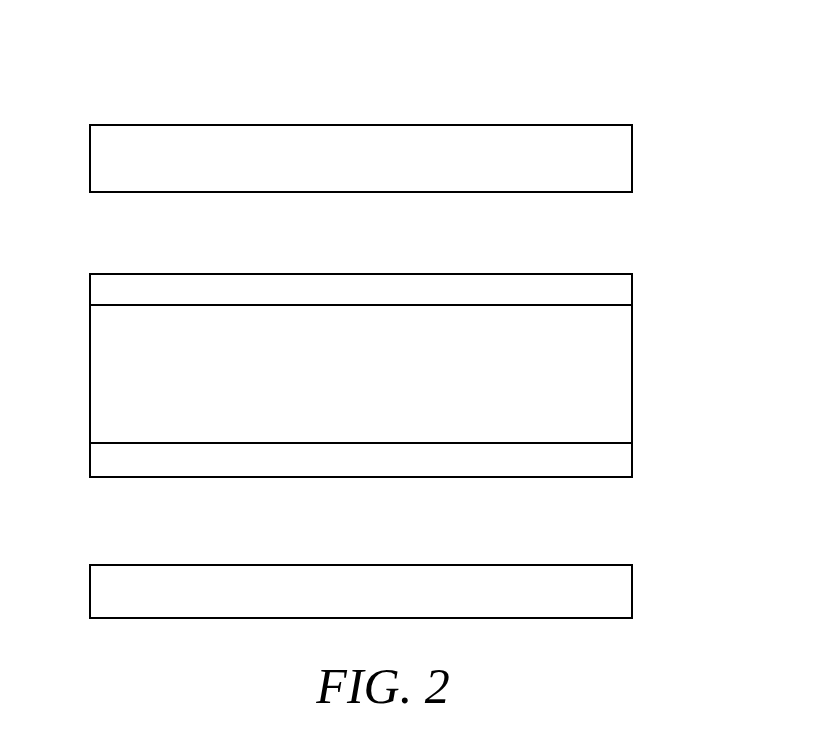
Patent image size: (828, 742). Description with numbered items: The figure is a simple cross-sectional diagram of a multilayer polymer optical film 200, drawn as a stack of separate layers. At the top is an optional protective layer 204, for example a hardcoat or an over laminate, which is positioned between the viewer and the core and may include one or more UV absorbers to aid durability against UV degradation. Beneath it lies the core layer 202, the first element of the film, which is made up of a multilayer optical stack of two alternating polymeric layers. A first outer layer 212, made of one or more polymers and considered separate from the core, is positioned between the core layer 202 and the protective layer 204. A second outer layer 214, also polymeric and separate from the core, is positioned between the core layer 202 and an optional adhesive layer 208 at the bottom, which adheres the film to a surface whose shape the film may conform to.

The multilayer polymer optical film 200 is at (143, 52).
The protective layer 204 is at (607, 158).
The core layer 202 is at (607, 373).
The first outer layer 212 is at (607, 288).
The second outer layer 214 is at (607, 458).
The adhesive layer 208 is at (607, 588).